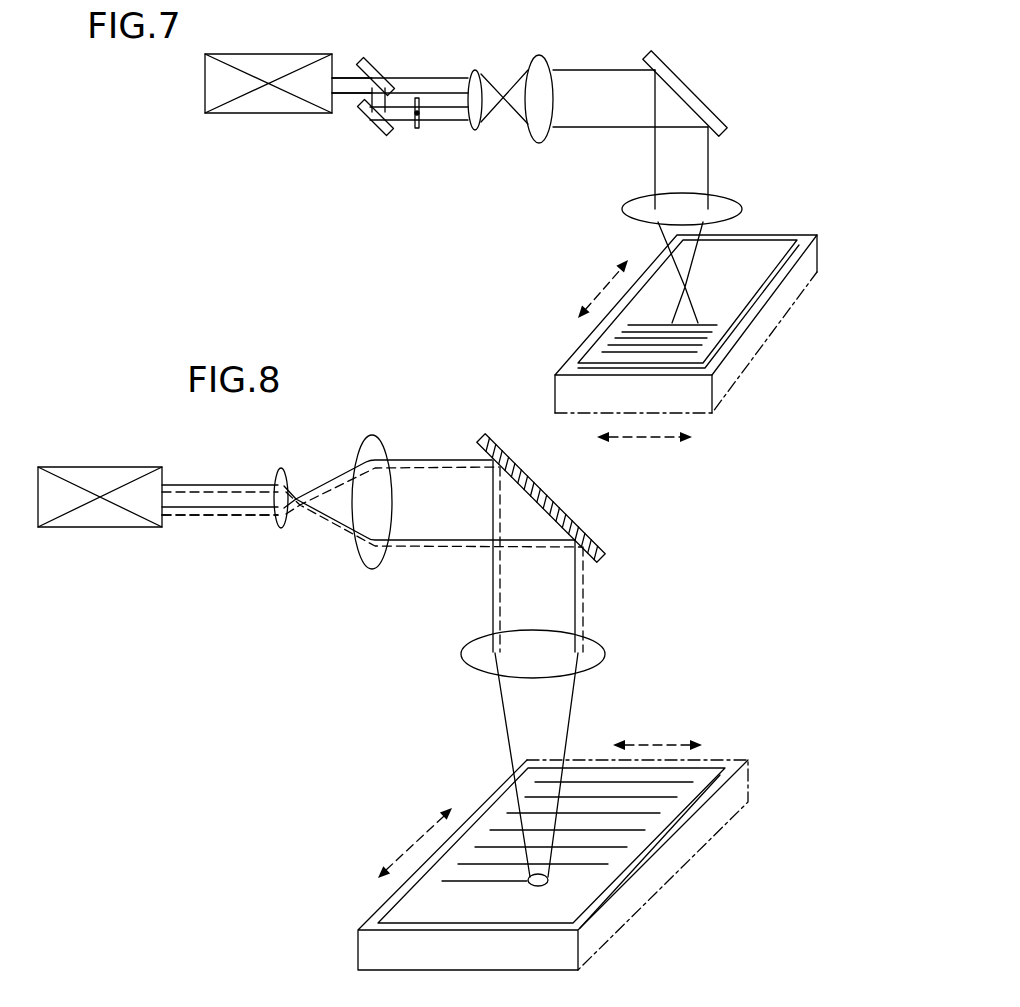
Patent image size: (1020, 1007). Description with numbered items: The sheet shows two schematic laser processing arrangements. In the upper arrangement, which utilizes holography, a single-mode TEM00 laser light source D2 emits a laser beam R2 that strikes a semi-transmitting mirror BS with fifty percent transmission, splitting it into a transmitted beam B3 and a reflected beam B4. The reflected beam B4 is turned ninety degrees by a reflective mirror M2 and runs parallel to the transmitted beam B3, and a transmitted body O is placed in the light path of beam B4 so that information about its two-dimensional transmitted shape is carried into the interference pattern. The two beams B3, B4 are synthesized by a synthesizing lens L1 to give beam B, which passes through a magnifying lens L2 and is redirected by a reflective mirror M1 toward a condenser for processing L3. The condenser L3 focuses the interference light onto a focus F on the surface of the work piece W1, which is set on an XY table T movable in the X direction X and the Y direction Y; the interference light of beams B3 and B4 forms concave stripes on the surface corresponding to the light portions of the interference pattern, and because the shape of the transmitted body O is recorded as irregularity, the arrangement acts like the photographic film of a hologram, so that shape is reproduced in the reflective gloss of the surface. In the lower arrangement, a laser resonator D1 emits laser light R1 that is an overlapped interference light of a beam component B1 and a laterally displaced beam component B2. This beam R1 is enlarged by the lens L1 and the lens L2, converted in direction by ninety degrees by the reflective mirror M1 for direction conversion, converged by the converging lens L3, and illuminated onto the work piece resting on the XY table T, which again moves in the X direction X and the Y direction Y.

In FIG. 7, the laser light source D2 is at (217, 75).
In FIG. 8, the laser resonator D1 is at (82, 478).
In FIG. 7, the laser beam R2 is at (343, 85).
In FIG. 8, the laser light R1 is at (220, 500).
In FIG. 7, the semi-transmitting mirror BS is at (373, 63).
In FIG. 7, the transmitted beam B3 is at (453, 82).
In FIG. 7, the reflected beam B4 is at (452, 112).
In FIG. 8, the beam component B1 is at (182, 484).
In FIG. 8, the laterally displaced beam component B2 is at (188, 514).
In FIG. 7, the synthesized beam B is at (680, 163).
In FIG. 7, the reflective mirror M2 is at (383, 130).
In FIG. 7, the reflective mirror M1 is at (690, 98).
In FIG. 8, the reflective mirror M1 is at (585, 494).
In FIG. 7, the transmitted body O is at (416, 122).
In FIG. 7, the synthesizing lens L1 is at (478, 70).
In FIG. 8, the synthesizing lens L1 is at (284, 472).
In FIG. 7, the magnifying lens L2 is at (548, 62).
In FIG. 8, the magnifying lens L2 is at (376, 440).
In FIG. 7, the condenser for processing L3 is at (742, 209).
In FIG. 8, the condenser for processing L3 is at (604, 665).
In FIG. 7, the work piece W1 is at (780, 234).
In FIG. 7, the focus point / interference fringe F is at (688, 290).
In FIG. 7, the XY table T is at (553, 392).
In FIG. 8, the XY table T is at (620, 917).
In FIG. 7, the X direction X is at (653, 440).
In FIG. 8, the X direction X is at (650, 742).
In FIG. 7, the Y direction Y is at (600, 295).
In FIG. 8, the Y direction Y is at (408, 857).